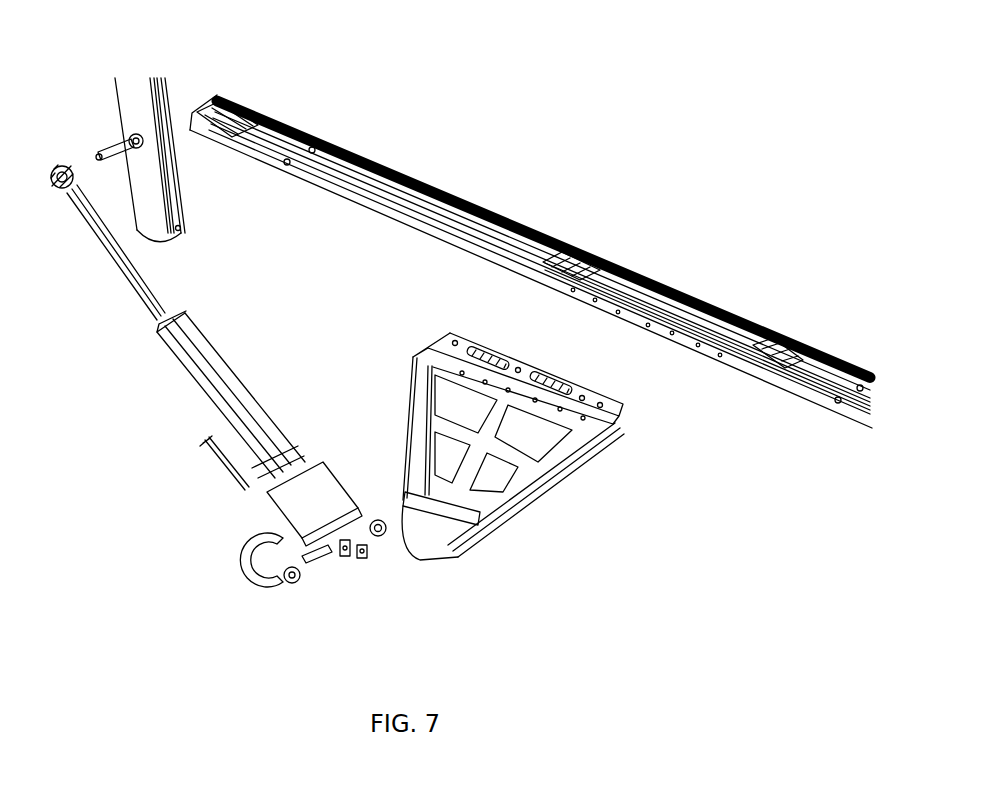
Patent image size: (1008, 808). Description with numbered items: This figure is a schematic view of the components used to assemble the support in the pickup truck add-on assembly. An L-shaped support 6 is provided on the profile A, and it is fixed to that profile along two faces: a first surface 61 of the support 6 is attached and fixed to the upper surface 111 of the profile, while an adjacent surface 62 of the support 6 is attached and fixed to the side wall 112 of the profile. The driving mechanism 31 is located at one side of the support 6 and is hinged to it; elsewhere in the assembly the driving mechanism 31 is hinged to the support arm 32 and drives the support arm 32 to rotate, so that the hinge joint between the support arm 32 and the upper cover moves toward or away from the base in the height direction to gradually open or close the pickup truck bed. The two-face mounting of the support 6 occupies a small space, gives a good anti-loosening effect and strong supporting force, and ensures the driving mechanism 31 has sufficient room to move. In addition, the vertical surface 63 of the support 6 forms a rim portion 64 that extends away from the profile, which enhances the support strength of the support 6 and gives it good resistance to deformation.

The L-shaped support 6 is at (570, 476).
The driving mechanism 31 is at (300, 545).
The support arm 32 is at (140, 78).
The first surface 61 is at (617, 447).
The adjacent surface 62 is at (502, 485).
The vertical surface 63 is at (427, 498).
The rim portion 64 is at (400, 458).
The upper surface 111 is at (531, 273).
The side wall 112 is at (658, 350).